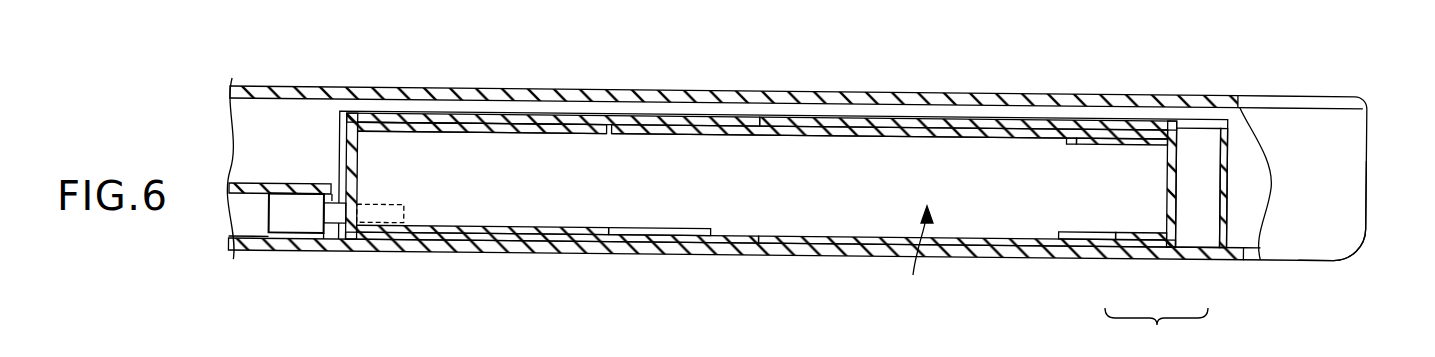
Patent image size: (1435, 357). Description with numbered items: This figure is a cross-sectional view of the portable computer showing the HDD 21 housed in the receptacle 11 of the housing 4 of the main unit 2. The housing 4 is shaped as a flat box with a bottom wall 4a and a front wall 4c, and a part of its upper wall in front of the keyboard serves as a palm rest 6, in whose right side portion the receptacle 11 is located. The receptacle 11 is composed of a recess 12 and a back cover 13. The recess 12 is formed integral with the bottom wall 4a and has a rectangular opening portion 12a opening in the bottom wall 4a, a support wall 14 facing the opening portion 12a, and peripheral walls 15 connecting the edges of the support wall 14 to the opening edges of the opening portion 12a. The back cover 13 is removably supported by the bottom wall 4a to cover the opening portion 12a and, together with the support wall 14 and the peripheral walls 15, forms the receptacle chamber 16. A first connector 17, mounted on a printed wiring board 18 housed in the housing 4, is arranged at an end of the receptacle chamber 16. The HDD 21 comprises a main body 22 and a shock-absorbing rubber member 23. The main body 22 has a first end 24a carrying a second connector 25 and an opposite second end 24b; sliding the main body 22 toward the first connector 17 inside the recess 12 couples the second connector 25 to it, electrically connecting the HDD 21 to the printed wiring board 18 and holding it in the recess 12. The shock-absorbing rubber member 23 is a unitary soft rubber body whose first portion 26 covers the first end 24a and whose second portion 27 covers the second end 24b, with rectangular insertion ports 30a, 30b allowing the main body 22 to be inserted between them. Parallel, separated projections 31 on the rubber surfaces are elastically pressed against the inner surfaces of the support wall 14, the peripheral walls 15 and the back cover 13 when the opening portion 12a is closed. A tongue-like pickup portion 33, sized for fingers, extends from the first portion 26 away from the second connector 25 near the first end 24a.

The main unit 2 is at (1337, 256).
The housing 4 is at (1352, 98).
The bottom wall 4a is at (243, 252).
The front wall 4c is at (1358, 188).
The palm rest 6 is at (665, 93).
The receptacle 11 is at (1156, 331).
The recess 12 is at (1218, 222).
The opening portion 12a is at (345, 251).
The back cover 13 is at (1098, 256).
The support wall 14 is at (855, 123).
The peripheral walls 15 is at (338, 142).
The receptacle chamber 16 is at (1190, 143).
The first connector 17 is at (291, 232).
The printed wiring board 18 is at (248, 186).
The HDD 21 is at (917, 256).
The main body 22 is at (753, 142).
The shock-absorbing rubber member 23 is at (505, 135).
The first end 24a is at (370, 142).
The second end 24b is at (1157, 133).
The second connector 25 is at (403, 224).
The first portion 26 is at (452, 130).
The second portion 27 is at (1105, 133).
The insertion port 30a is at (1061, 255).
The insertion port 30b is at (1055, 130).
The projections 31 is at (563, 125).
The pickup portion 33 is at (662, 238).